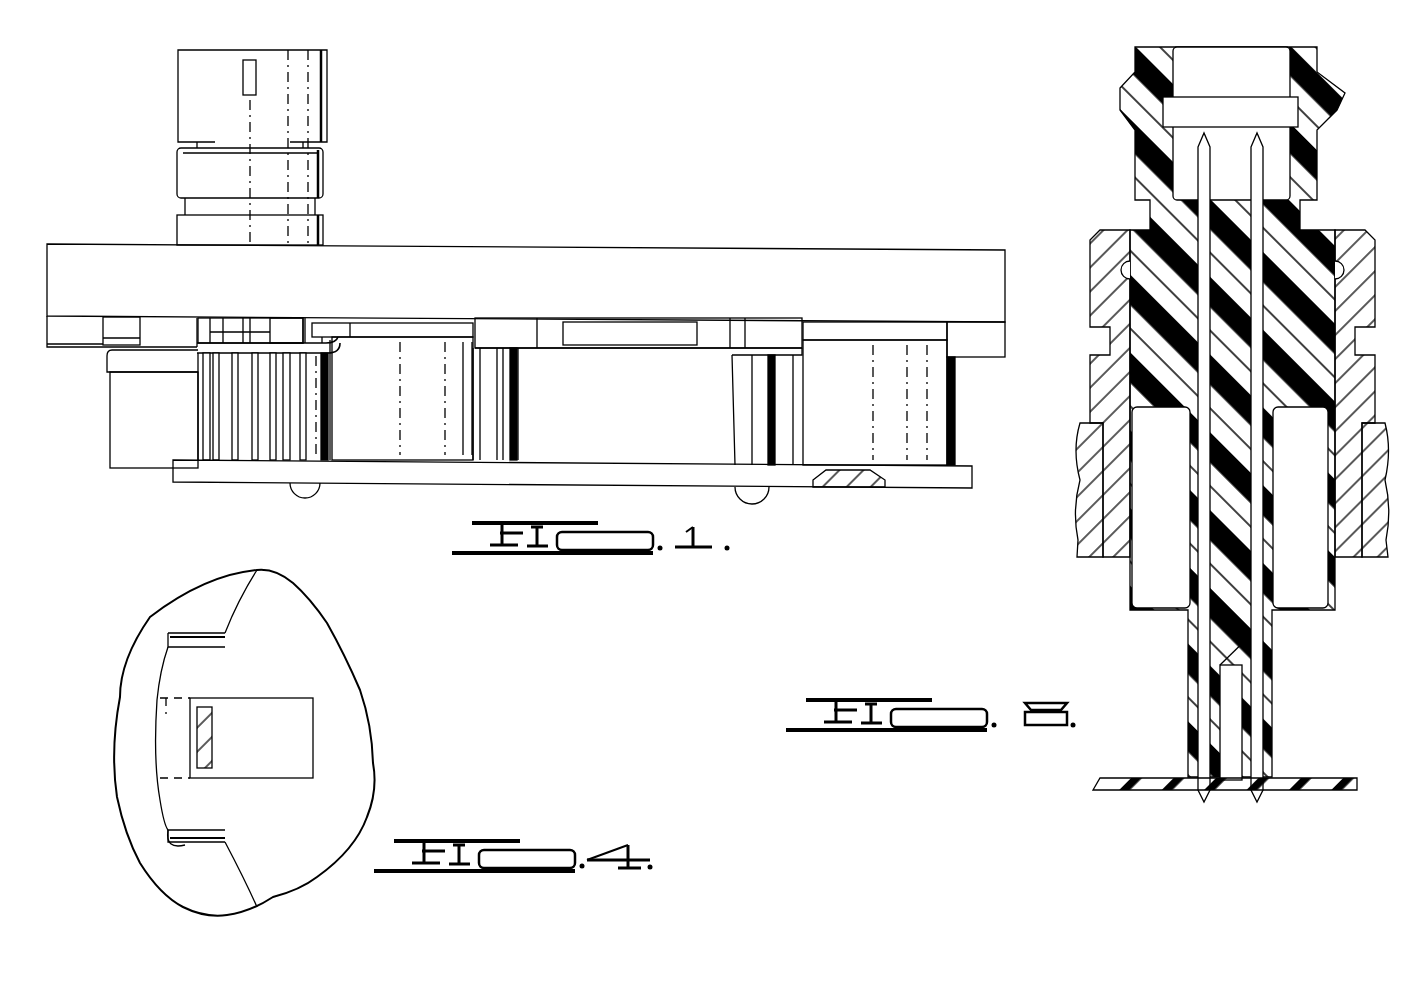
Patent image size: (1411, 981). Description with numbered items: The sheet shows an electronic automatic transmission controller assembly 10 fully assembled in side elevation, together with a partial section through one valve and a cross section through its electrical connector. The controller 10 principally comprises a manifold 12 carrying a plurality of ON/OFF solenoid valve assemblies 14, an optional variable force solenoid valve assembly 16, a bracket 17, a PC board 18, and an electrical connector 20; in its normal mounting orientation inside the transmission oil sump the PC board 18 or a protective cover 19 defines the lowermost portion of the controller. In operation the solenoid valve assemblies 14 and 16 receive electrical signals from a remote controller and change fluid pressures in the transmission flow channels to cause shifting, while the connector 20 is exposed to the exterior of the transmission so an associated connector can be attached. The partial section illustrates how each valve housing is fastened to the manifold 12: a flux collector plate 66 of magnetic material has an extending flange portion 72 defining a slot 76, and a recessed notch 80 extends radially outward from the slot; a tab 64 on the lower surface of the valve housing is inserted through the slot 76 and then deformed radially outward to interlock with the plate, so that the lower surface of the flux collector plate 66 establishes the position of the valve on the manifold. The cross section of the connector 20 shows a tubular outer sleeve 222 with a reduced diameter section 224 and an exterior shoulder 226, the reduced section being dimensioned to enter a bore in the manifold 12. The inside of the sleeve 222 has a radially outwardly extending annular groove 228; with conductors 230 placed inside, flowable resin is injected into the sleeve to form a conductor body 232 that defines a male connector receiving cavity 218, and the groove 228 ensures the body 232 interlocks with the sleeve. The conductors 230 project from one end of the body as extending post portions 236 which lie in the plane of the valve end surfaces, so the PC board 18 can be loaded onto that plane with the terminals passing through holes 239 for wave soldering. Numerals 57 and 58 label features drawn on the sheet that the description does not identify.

In FIG. 1, the automatic transmission controller assembly 10 is at (774, 205).
In FIG. 1, the manifold 12 is at (630, 250).
In FIG. 4, the manifold 12 is at (141, 632).
In FIG. 8, the manifold 12 is at (1082, 532).
In FIG. 1, the ON/OFF solenoid valve assemblies 14 is at (512, 400).
In FIG. 1, the variable force solenoid valve assembly 16 is at (134, 416).
In FIG. 1, the bracket 17 is at (71, 350).
In FIG. 1, the PC board 18 is at (843, 470).
In FIG. 8, the PC board 18 is at (1113, 790).
In FIG. 1, the protective cover 19 is at (856, 480).
In FIG. 1, the electrical connector 20 is at (302, 147).
In FIG. 8, the electrical connector 20 is at (1086, 253).
In FIG. 8, the retaining ring 57 is at (1118, 560).
In FIG. 1, the contact pin stack 58 is at (313, 394).
In FIG. 4, the tab 64 is at (197, 742).
In FIG. 4, the flux collector plate 66 is at (236, 597).
In FIG. 4, the flange portion 72 is at (186, 843).
In FIG. 4, the slot 76 is at (273, 770).
In FIG. 4, the recessed notch 80 is at (162, 714).
In FIG. 8, the male connector receiving cavity 218 is at (1278, 63).
In FIG. 1, the tubular outer sleeve 222 is at (329, 180).
In FIG. 8, the tubular outer sleeve 222 is at (1108, 350).
In FIG. 8, the reduced diameter section 224 is at (1084, 493).
In FIG. 8, the exterior shoulder 226 is at (1084, 468).
In FIG. 8, the annular groove 228 is at (1334, 265).
In FIG. 8, the conductors 230 is at (1258, 690).
In FIG. 8, the conductor body 232 is at (1318, 182).
In FIG. 8, the post portions 236 is at (1204, 806).
In FIG. 8, the holes 239 is at (1270, 768).